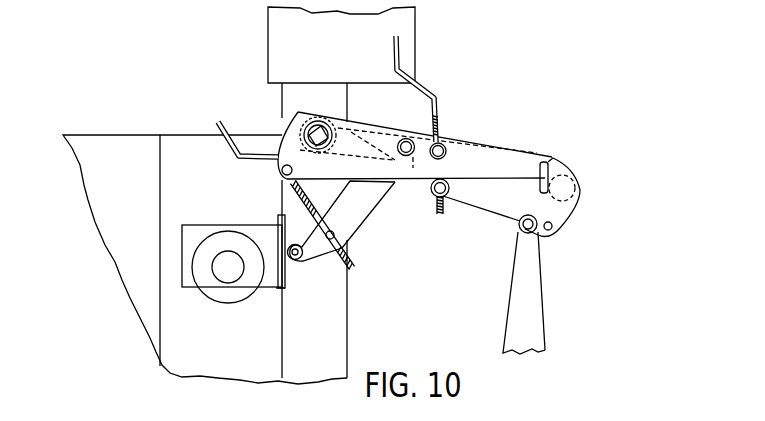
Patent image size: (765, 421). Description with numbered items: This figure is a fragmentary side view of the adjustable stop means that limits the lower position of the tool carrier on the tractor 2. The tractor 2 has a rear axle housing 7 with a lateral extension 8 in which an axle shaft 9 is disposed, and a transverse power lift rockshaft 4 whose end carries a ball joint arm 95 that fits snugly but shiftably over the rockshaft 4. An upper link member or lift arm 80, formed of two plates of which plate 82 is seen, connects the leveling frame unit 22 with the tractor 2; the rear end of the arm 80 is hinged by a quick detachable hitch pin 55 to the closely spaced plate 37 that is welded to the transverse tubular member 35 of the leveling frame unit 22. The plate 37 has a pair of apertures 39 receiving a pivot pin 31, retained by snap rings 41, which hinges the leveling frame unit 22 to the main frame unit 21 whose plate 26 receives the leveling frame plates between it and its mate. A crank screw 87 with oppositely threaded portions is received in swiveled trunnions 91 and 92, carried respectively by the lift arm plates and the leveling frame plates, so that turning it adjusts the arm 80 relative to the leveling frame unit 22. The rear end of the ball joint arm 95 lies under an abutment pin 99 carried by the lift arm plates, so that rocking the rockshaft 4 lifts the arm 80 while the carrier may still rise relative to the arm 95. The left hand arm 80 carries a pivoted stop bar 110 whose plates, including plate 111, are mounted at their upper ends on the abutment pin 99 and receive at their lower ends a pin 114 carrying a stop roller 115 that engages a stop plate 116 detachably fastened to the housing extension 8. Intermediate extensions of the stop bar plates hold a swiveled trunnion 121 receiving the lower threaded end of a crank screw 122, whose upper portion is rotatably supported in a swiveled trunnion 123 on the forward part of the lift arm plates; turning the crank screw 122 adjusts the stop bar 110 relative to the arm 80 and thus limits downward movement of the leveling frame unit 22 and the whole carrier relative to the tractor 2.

The tractor 2 is at (122, 131).
The power lift rockshaft 4 is at (313, 128).
The rear axle housing 7 is at (212, 249).
The lateral extension 8 is at (186, 252).
The axle shaft 9 is at (222, 273).
The main frame unit 21 is at (543, 293).
The leveling frame unit 22 is at (549, 192).
The main frame plate 26 is at (538, 289).
The pivot pin 31 is at (519, 232).
The transverse tubular member 35 is at (567, 173).
The plate 37 is at (486, 214).
The aperture 39 is at (556, 229).
The snap ring 41 is at (545, 236).
The hitch pin 55 is at (548, 162).
The upper link member 80 is at (371, 114).
The plate 82 is at (395, 148).
The crank screw 87 is at (418, 90).
The swiveled trunnion 91 is at (441, 143).
The swiveled trunnion 92 is at (437, 199).
The ball joint arm 95 is at (351, 132).
The abutment pin 99 is at (406, 139).
The stop bar 110 is at (352, 240).
The plate 111 is at (373, 195).
The pin 114 is at (302, 259).
The stop roller 115 is at (293, 262).
The stop plate 116 is at (283, 272).
The swiveled trunnion 121 is at (330, 240).
The crank screw 122 is at (249, 156).
The swiveled trunnion 123 is at (283, 176).